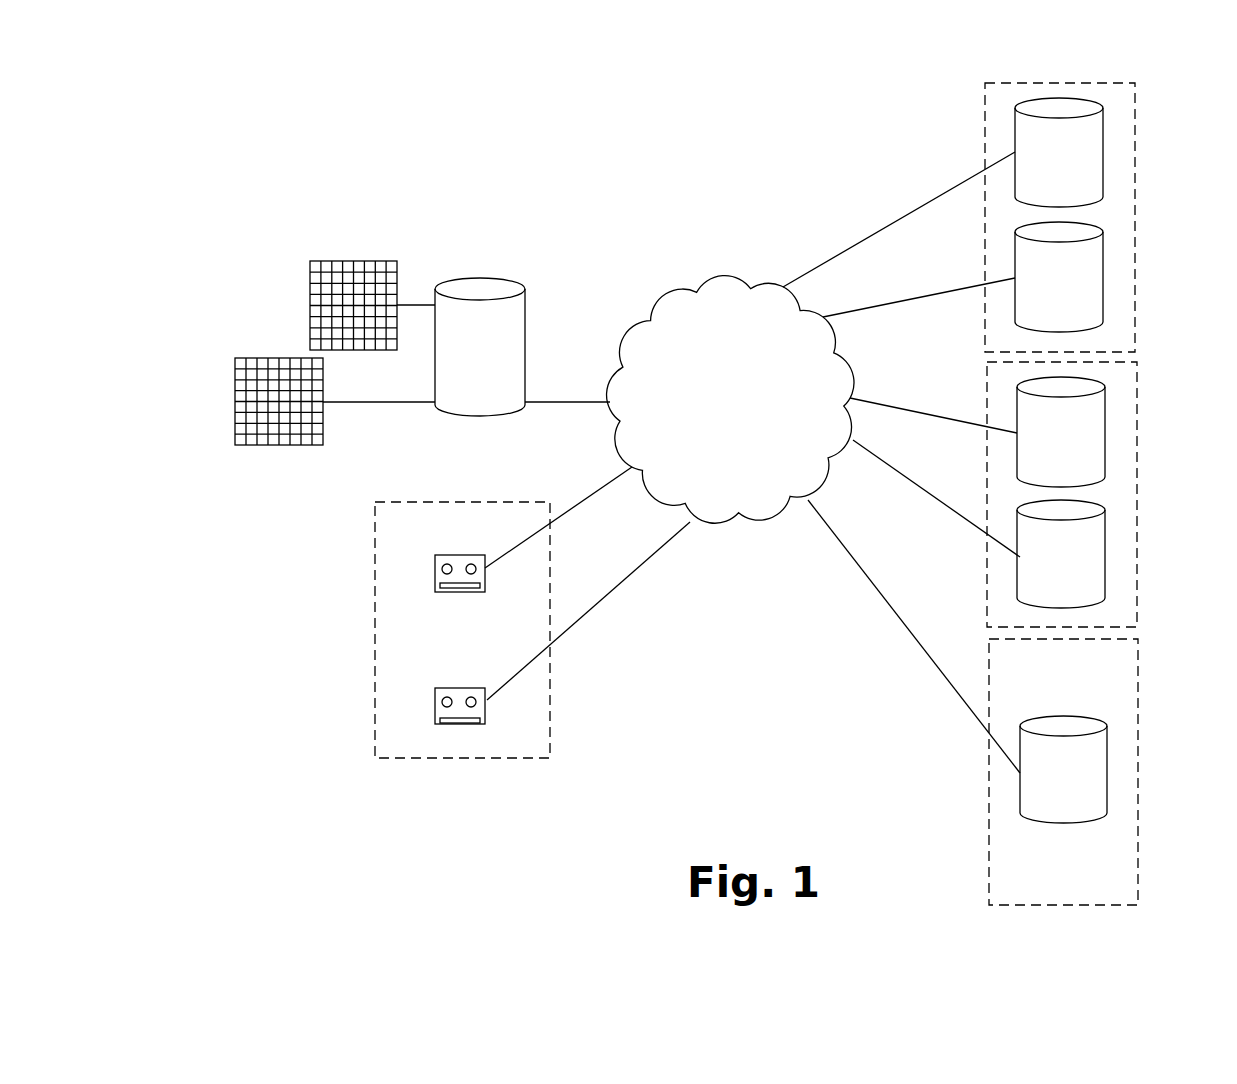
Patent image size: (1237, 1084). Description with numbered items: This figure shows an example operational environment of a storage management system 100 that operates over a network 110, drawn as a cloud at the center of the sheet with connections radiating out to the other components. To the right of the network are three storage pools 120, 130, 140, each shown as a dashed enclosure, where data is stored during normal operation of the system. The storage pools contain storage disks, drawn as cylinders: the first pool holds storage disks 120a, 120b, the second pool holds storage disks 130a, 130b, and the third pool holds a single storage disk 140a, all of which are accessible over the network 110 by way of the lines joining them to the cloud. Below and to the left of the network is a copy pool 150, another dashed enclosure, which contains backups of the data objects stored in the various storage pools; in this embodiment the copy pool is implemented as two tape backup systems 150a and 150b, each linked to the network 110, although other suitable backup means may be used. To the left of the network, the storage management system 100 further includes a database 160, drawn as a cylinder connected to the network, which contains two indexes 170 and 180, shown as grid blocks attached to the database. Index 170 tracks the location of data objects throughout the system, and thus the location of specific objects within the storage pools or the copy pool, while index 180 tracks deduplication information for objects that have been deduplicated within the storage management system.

The storage management system 100 is at (295, 158).
The network 110 is at (728, 275).
The storage pool 120 is at (1135, 110).
The storage disk 120a is at (1103, 148).
The storage disk 120b is at (1103, 280).
The storage pool 130 is at (1137, 388).
The storage disk 130a is at (1105, 428).
The storage disk 130b is at (1105, 555).
The storage pool 140 is at (1138, 665).
The storage disk 140a is at (1107, 768).
The copy pool 150 is at (458, 502).
The tape backup system 150a is at (462, 555).
The tape backup system 150b is at (462, 688).
The database 160 is at (475, 290).
The index 170 is at (350, 261).
The index 180 is at (270, 358).